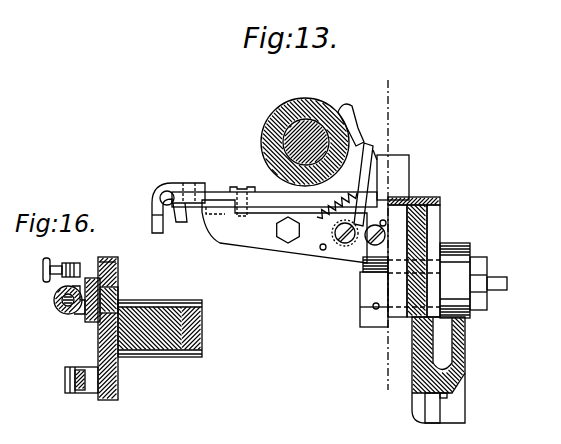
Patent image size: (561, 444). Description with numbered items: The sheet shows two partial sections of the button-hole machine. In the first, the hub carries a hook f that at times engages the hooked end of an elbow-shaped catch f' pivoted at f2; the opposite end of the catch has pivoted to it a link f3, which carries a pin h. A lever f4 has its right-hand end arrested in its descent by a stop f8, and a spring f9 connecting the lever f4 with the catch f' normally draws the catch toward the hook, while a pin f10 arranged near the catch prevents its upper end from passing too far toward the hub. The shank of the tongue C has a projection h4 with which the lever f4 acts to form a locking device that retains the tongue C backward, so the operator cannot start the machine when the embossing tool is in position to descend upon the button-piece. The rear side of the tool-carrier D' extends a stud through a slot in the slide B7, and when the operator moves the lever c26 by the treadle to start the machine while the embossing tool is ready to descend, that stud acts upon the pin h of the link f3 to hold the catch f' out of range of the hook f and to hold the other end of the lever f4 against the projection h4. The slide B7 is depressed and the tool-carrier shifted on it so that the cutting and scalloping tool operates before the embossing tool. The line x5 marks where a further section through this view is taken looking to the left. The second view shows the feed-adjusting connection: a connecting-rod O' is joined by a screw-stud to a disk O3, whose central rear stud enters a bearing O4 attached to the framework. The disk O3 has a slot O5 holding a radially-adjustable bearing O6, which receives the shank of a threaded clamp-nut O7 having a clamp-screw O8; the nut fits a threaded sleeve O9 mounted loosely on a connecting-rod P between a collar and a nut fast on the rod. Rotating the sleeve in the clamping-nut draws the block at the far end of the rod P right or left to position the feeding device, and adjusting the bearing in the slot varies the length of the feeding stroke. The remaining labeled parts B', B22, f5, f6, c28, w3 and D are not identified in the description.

In FIG. 13, the section line x5 is at (381, 227).
In FIG. 13, the wheel B' is at (295, 138).
In FIG. 13, the wheel hub B22 is at (292, 138).
In FIG. 13, the hook f is at (363, 170).
In FIG. 13, the elbow-shaped catch f' is at (387, 144).
In FIG. 13, the pivot f2 is at (344, 244).
In FIG. 13, the link f3 is at (370, 282).
In FIG. 13, the lever f4 is at (310, 236).
In FIG. 13, the nut f5 is at (286, 236).
In FIG. 13, the arm f6 is at (214, 242).
In FIG. 13, the stop f8 is at (321, 250).
In FIG. 13, the spring f9 is at (360, 150).
In FIG. 13, the pin f10 is at (380, 224).
In FIG. 13, the pin h is at (374, 309).
In FIG. 13, the projection h4 is at (210, 176).
In FIG. 13, the lever c26 is at (158, 218).
In FIG. 13, the finger c28 is at (182, 222).
In FIG. 13, the pin w3 is at (364, 268).
In FIG. 13, the tongue C is at (409, 166).
In FIG. 13, the slide B7 is at (440, 190).
In FIG. 13, the shaft D is at (473, 280).
In FIG. 13, the tool-carrier D' is at (455, 370).
In FIG. 16, the connecting-rod O' is at (66, 385).
In FIG. 16, the disk O3 is at (118, 272).
In FIG. 16, the bearing O4 is at (166, 357).
In FIG. 16, the slot O5 is at (110, 265).
In FIG. 16, the radially-adjustable bearing O6 is at (112, 290).
In FIG. 16, the threaded clamp-nut O7 is at (72, 314).
In FIG. 16, the clamp-screw O8 is at (45, 270).
In FIG. 16, the threaded sleeve O9 is at (56, 299).
In FIG. 16, the connecting-rod P is at (62, 306).